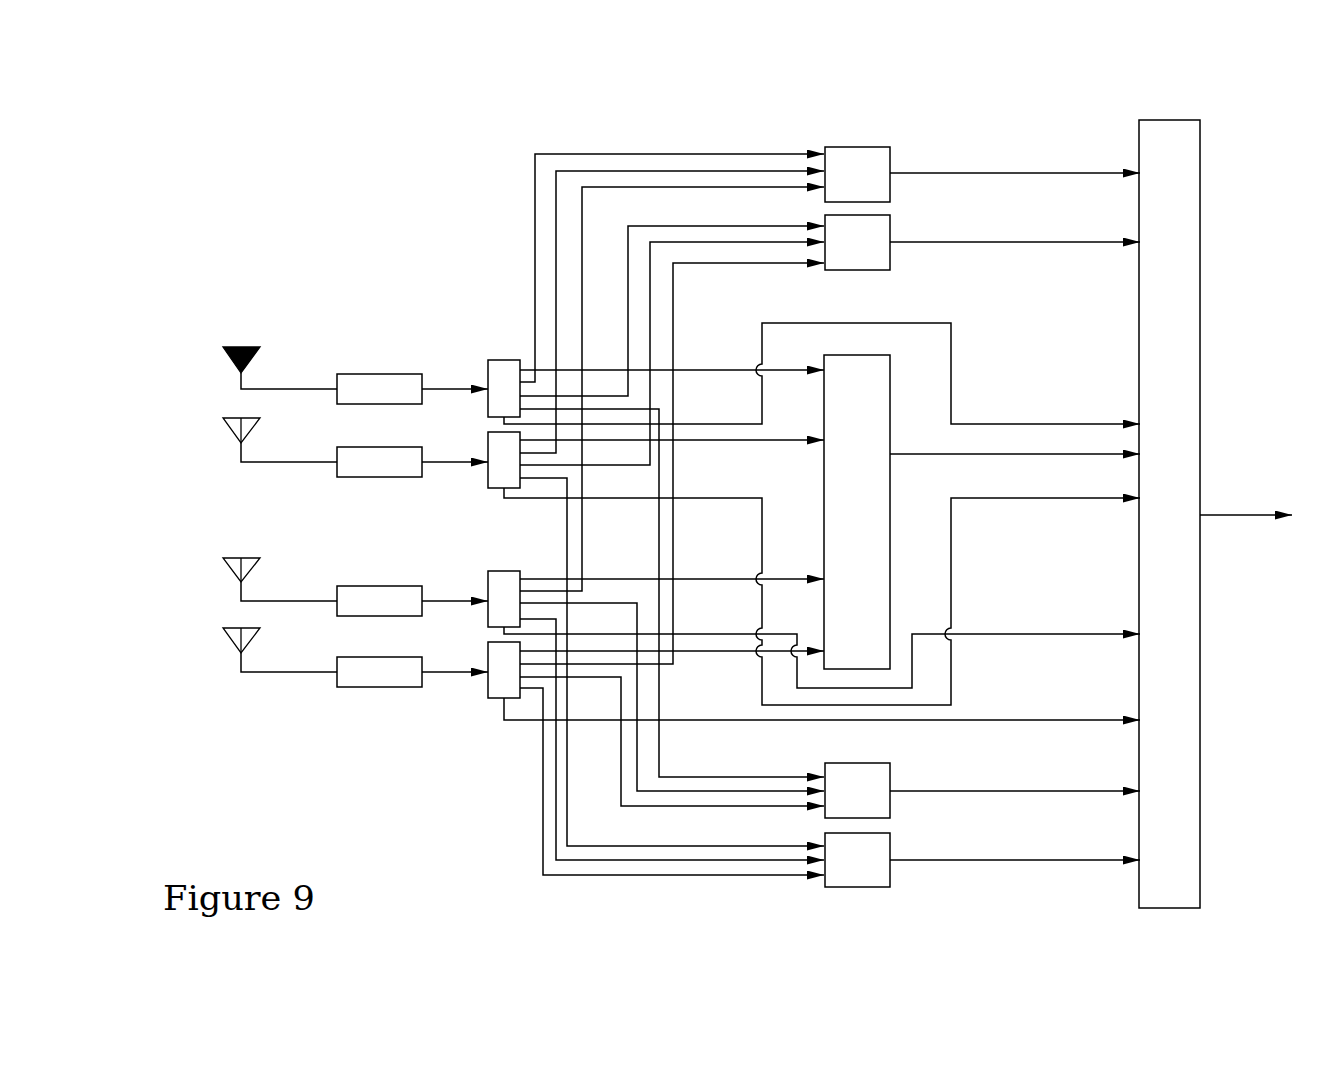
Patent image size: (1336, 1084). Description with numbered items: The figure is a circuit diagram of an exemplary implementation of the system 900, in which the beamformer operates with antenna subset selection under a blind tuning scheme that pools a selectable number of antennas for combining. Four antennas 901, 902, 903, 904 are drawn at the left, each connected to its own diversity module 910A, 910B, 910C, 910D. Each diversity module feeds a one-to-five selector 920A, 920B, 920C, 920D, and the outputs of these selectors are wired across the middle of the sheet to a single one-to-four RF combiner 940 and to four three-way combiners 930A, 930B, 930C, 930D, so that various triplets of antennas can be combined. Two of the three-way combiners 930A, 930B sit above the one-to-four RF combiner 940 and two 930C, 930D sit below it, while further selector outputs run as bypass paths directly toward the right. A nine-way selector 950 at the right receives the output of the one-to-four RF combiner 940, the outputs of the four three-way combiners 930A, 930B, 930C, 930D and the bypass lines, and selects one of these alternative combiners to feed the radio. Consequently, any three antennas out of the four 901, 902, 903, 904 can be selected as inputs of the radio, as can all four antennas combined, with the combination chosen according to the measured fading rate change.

The antenna combining system 900 is at (223, 203).
The antenna 901 is at (231, 360).
The antenna 902 is at (228, 432).
The antenna 903 is at (230, 571).
The antenna 904 is at (228, 643).
The diversity module 910A is at (393, 374).
The diversity module 910B is at (393, 447).
The diversity module 910C is at (393, 586).
The diversity module 910D is at (393, 657).
The 1:5 selector 920A is at (500, 360).
The 1:5 selector 920B is at (490, 488).
The 1:5 selector 920C is at (488, 575).
The 1:5 selector 920D is at (495, 698).
The three-way combiner 930A is at (843, 147).
The three-way combiner 930B is at (843, 270).
The three-way combiner 930C is at (835, 763).
The three-way combiner 930D is at (843, 887).
The 1:4 RF combiner 940 is at (824, 462).
The nine-way selector 950 is at (1200, 186).